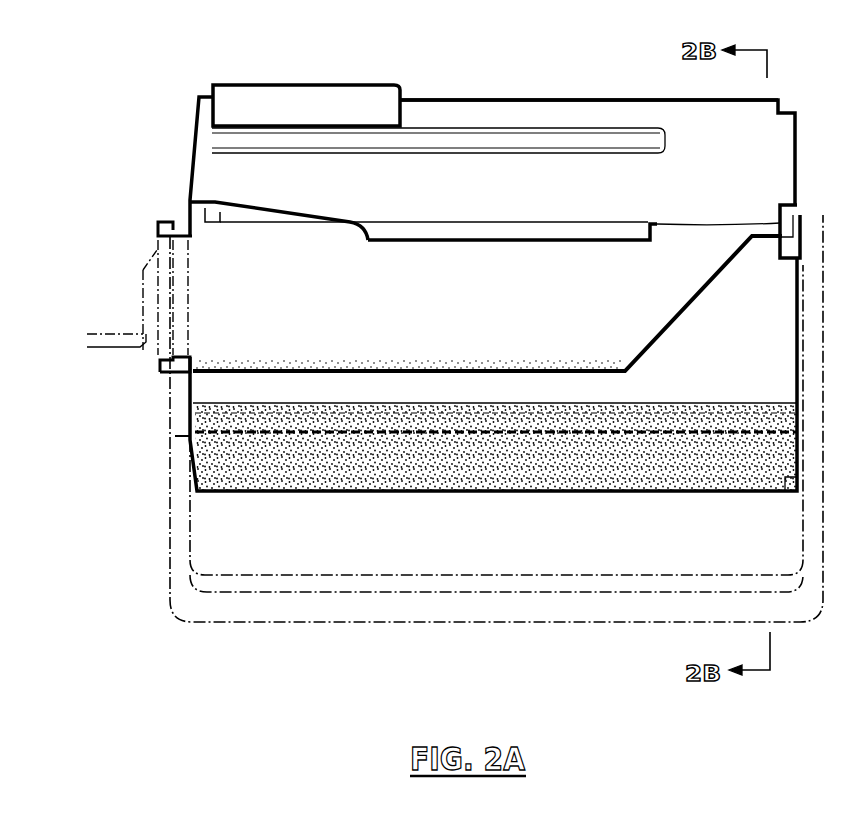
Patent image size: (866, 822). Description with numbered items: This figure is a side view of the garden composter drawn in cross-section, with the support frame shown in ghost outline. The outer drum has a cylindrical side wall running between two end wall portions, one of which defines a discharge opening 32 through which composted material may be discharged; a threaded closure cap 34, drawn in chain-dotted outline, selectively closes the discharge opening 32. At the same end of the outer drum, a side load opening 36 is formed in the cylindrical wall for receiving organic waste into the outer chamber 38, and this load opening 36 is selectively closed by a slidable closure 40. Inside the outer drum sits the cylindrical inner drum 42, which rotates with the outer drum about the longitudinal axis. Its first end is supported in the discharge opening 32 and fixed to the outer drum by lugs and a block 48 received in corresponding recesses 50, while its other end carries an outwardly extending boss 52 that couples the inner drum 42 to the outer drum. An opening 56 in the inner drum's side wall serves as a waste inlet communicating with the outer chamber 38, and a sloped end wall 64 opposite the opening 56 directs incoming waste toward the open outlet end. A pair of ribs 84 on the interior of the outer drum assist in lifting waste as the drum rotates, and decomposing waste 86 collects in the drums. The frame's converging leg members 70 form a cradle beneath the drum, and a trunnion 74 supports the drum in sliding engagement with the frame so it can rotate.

The discharge opening 32 is at (187, 220).
The threaded closure cap 34 is at (157, 370).
The side load opening 36 is at (407, 110).
The outer chamber 38 is at (767, 158).
The slidable closure 40 is at (286, 85).
The inner drum 42 is at (437, 222).
The block 48 is at (207, 213).
The recesses 50 is at (250, 205).
The outwardly extending boss 52 is at (767, 236).
The opening 56 is at (691, 275).
The sloped end wall 64 is at (678, 322).
The converging leg members 70 is at (657, 573).
The trunnion 74 is at (797, 212).
The ribs 84 is at (538, 145).
The decomposing waste 86 is at (621, 403).